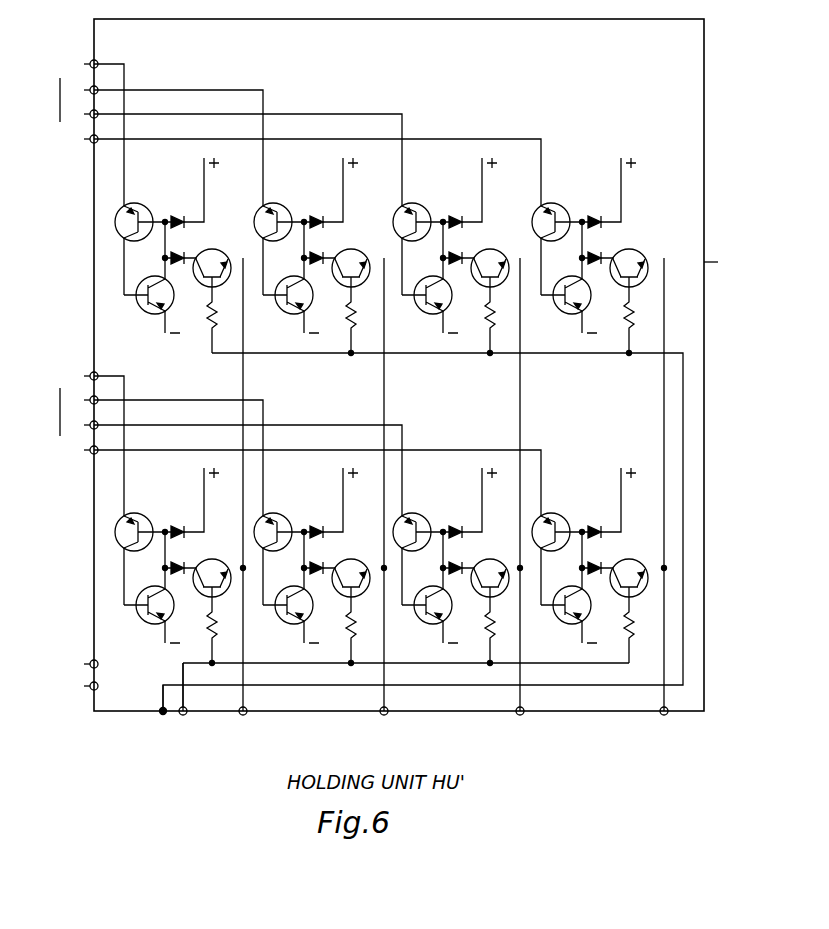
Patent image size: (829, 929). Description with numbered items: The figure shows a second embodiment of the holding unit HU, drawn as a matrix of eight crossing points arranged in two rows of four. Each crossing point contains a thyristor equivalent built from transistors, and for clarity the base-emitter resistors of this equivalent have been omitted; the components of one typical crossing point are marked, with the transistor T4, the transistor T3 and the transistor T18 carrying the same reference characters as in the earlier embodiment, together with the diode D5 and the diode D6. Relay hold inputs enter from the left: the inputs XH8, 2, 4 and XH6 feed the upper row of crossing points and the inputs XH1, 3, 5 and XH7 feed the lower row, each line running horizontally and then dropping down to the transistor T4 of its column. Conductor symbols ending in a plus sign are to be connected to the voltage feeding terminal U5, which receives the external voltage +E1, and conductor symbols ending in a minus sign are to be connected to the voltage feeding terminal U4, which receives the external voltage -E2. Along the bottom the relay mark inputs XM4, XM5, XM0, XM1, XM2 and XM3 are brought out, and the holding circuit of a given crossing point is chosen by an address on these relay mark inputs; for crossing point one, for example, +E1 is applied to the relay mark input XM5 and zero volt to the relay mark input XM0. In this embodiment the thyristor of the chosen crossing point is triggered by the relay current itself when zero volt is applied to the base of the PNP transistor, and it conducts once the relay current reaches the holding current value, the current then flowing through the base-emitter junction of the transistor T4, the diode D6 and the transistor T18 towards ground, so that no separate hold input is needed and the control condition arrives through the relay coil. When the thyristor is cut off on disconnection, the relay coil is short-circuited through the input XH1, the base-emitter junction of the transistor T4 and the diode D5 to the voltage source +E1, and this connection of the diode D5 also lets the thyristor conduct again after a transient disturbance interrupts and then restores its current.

The relay hold input XH8 is at (90, 64).
The relay hold input line 2 is at (90, 90).
The relay hold input line 4 is at (90, 114).
The relay hold input XH6 is at (90, 139).
The relay hold input XH1 is at (90, 376).
The relay hold input line 3 is at (90, 400).
The relay hold input line 5 is at (90, 425).
The relay hold input XH7 is at (90, 450).
The voltage feeding terminal U4 is at (90, 664).
The voltage feeding terminal U5 is at (90, 686).
The relay mark input XM0 is at (245, 716).
The relay mark input XM1 is at (386, 716).
The relay mark input XM2 is at (522, 716).
The relay mark input XM3 is at (666, 716).
The relay mark input XM4 is at (161, 716).
The relay mark input XM5 is at (185, 716).
The holding unit HU is at (726, 263).
The transistor T4 is at (140, 516).
The transistor T3 is at (160, 614).
The transistor T18 is at (213, 288).
The diode D5 is at (181, 206).
The diode D6 is at (181, 246).